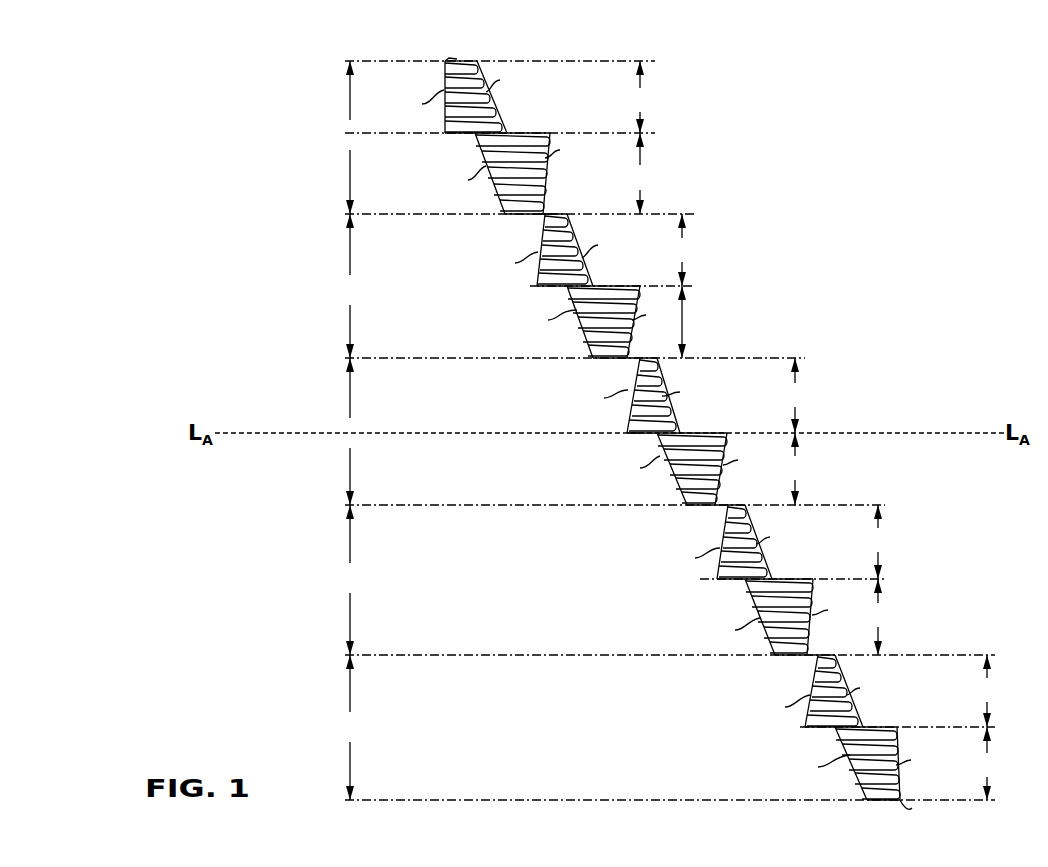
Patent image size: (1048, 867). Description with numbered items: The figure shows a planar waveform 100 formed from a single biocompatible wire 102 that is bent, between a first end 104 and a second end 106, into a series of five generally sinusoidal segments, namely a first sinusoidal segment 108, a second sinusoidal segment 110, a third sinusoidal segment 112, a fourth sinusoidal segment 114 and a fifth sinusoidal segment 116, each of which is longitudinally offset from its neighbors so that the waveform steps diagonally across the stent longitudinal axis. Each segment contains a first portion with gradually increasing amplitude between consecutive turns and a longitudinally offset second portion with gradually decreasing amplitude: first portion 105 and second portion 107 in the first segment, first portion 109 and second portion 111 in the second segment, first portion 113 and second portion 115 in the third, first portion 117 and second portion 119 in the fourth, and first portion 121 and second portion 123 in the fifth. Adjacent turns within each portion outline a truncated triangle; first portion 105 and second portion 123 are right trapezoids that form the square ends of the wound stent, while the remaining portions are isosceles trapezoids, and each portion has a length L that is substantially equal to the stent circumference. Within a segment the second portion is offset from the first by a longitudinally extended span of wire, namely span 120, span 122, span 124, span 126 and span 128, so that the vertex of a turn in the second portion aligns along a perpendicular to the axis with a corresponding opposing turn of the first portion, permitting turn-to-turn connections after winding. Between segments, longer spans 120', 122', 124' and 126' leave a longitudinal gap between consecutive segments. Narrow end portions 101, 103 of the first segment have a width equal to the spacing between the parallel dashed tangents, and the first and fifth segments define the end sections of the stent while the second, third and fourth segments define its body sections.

The planar waveform 100 is at (772, 310).
The narrow end portion 101 is at (463, 57).
The wire 102 is at (612, 438).
The narrow end portion 103 is at (516, 221).
The first end 104 is at (443, 60).
The first portion 105 is at (644, 97).
The second end 106 is at (906, 810).
The second portion 107 is at (644, 173).
The first sinusoidal segment 108 is at (350, 137).
The first portion 109 is at (682, 250).
The second sinusoidal segment 110 is at (350, 286).
The second portion 111 is at (684, 327).
The third sinusoidal segment 112 is at (350, 431).
The first portion 113 is at (795, 395).
The fourth sinusoidal segment 114 is at (350, 580).
The second portion 115 is at (795, 469).
The fifth sinusoidal segment 116 is at (350, 727).
The first portion 117 is at (878, 542).
The second portion 119 is at (878, 617).
The longitudinally extended span 120 is at (512, 114).
The longitudinally extended span 120' is at (550, 194).
The first portion 121 is at (987, 691).
The longitudinally extended span 122 is at (597, 270).
The longitudinally extended span 122' is at (635, 340).
The second portion 123 is at (987, 763).
The longitudinally extended span 124 is at (690, 416).
The longitudinally extended span 124' is at (733, 491).
The longitudinally extended span 126 is at (780, 563).
The longitudinally extended span 126' is at (820, 643).
The longitudinally extended span 128 is at (883, 727).